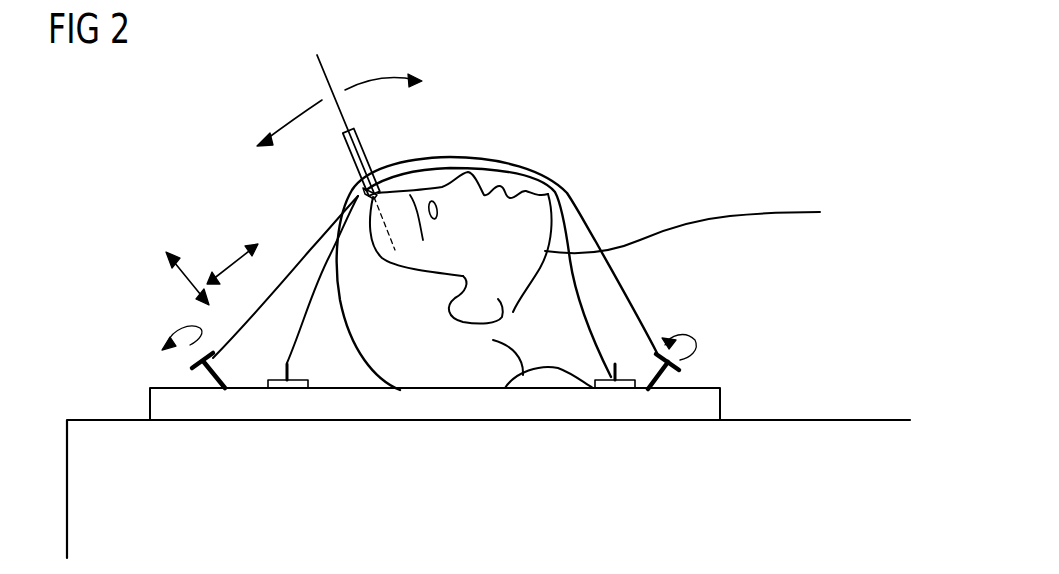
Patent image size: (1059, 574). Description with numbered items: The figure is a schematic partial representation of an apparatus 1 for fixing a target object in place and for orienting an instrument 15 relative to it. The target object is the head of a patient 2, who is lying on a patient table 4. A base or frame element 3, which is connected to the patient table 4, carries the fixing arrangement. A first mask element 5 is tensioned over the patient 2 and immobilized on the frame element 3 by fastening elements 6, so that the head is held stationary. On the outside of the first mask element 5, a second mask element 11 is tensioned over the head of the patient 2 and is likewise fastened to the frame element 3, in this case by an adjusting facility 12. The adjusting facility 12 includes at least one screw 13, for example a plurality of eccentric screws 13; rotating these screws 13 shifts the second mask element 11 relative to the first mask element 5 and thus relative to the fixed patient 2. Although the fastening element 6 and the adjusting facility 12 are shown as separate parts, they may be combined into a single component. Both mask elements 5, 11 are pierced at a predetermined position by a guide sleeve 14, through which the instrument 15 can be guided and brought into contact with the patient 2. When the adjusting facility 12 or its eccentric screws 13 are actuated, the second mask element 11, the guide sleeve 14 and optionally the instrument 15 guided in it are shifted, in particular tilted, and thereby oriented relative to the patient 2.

The apparatus 1 is at (435, 442).
The patient 2 is at (450, 203).
The frame element 3 is at (357, 410).
The patient table 4 is at (87, 420).
The first mask element 5 is at (322, 268).
The fastening element 6 is at (287, 389).
The second mask element 11 is at (324, 222).
The adjusting facility 12 is at (197, 362).
The eccentric screw 13 is at (421, 357).
The guide sleeve 14 is at (365, 147).
The instrument 15 is at (325, 72).